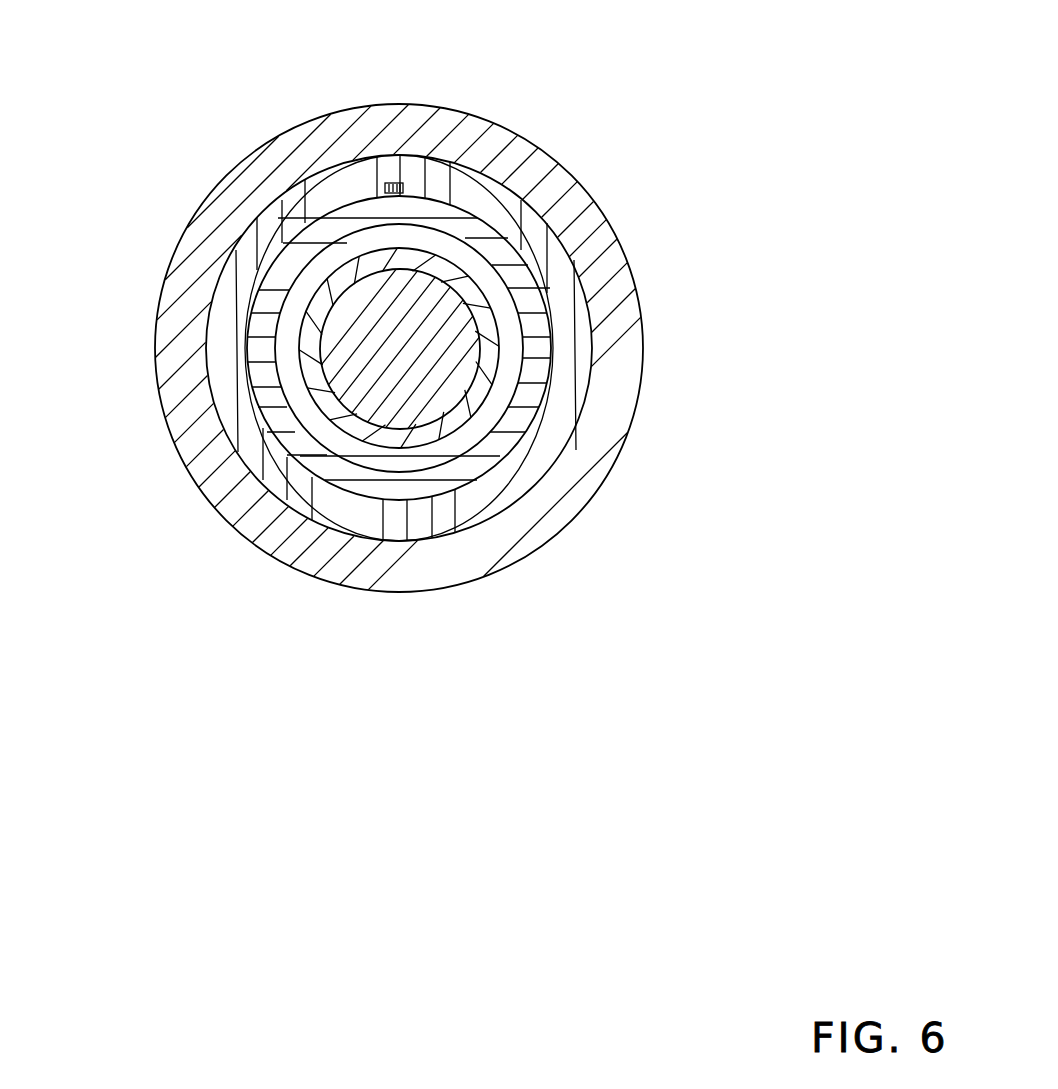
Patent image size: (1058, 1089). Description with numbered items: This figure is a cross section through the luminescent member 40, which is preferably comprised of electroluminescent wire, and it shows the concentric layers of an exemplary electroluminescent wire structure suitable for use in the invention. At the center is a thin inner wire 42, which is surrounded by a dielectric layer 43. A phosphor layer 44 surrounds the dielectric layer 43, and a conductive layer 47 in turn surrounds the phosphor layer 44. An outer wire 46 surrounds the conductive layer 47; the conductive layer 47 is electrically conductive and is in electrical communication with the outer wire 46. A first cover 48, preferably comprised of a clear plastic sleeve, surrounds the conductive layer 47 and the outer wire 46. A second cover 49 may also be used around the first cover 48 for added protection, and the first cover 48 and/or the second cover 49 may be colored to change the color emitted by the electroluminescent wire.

The luminescent member 40 is at (542, 548).
The inner wire 42 is at (345, 323).
The dielectric layer 43 is at (350, 277).
The phosphor layer 44 is at (382, 232).
The outer wire 46 is at (395, 183).
The conductive layer 47 is at (468, 228).
The first cover 48 is at (555, 262).
The second cover 49 is at (620, 380).